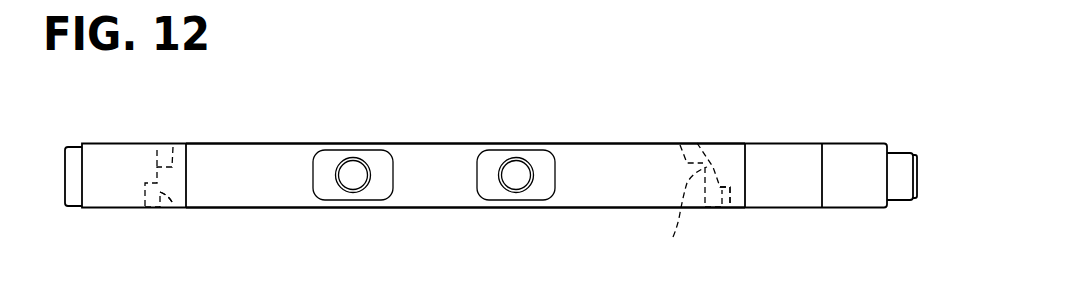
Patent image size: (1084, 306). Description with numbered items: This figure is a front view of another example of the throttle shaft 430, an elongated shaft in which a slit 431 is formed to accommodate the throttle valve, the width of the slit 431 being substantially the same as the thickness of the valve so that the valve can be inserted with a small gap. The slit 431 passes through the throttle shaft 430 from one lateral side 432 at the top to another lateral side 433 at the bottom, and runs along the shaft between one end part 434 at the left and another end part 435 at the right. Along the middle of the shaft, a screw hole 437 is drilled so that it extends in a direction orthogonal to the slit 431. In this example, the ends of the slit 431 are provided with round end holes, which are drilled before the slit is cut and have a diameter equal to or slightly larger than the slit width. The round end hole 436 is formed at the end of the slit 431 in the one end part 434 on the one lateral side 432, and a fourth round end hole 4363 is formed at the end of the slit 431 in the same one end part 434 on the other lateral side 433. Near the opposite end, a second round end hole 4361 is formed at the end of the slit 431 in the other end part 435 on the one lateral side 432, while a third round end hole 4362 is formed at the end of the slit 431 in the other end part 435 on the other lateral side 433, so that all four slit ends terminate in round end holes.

The throttle shaft 430 is at (792, 140).
The slit 431 is at (671, 220).
The one lateral side 432 is at (600, 143).
The another lateral side 433 is at (573, 208).
The one end part 434 is at (63, 185).
The another end part 435 is at (918, 174).
The round end hole 436 is at (177, 145).
The second round end hole 4361 is at (680, 145).
The third round end hole 4362 is at (730, 207).
The fourth round end hole 4363 is at (172, 202).
The screw hole 437 is at (525, 170).